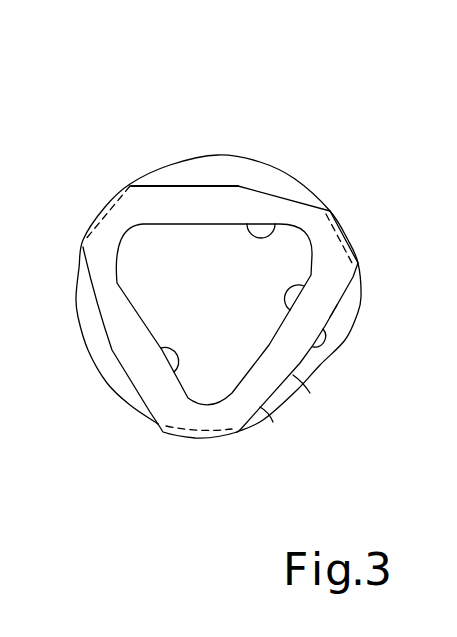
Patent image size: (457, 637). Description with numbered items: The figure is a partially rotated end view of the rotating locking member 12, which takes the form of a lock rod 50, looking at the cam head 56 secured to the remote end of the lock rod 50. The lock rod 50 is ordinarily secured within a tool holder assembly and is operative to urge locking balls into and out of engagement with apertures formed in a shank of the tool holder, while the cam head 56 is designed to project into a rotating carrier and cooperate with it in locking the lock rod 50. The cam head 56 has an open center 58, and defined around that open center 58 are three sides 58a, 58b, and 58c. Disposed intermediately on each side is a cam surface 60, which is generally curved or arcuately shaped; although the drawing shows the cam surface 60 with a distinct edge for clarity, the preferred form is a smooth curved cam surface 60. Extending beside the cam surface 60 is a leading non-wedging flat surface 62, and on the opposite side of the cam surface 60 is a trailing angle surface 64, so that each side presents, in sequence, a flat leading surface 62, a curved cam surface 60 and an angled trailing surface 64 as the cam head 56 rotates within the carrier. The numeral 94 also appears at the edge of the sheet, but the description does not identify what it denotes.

The rotating locking member 12 is at (277, 133).
The lock rod 50 is at (207, 185).
The cam head 56 is at (103, 398).
The open center 58 is at (160, 260).
The side 58a is at (283, 223).
The side 58b is at (345, 320).
The side 58c is at (152, 410).
The cam surface 60 is at (238, 186).
The leading non-wedging flat surface 62 is at (180, 186).
The trailing angle surface 64 is at (285, 195).
The reference element 94 is at (446, 276).